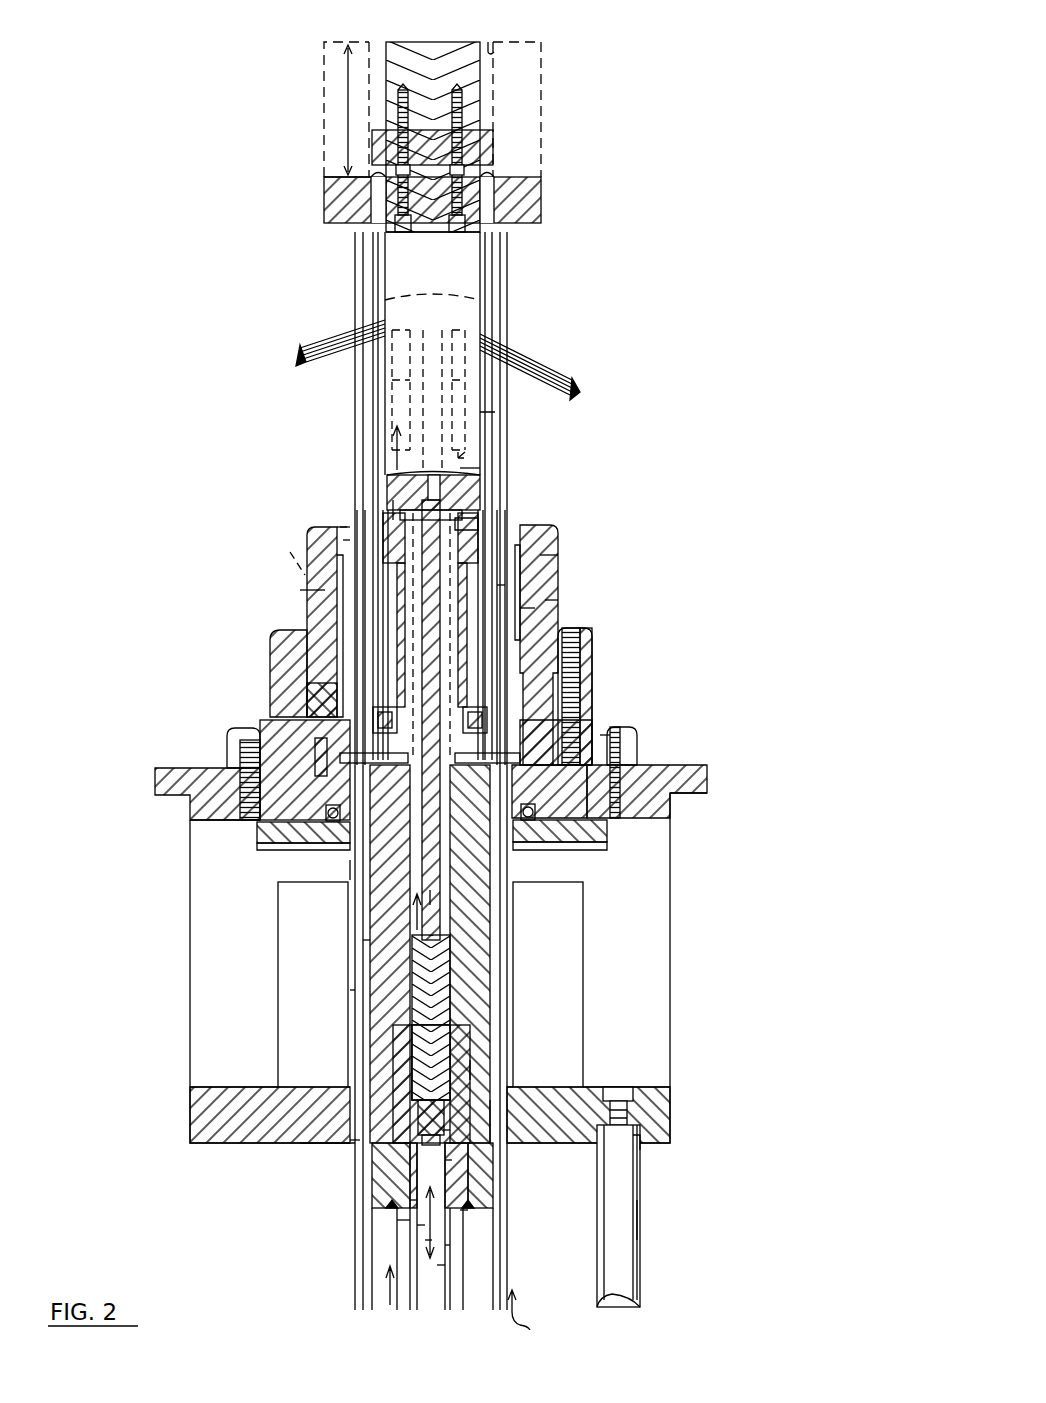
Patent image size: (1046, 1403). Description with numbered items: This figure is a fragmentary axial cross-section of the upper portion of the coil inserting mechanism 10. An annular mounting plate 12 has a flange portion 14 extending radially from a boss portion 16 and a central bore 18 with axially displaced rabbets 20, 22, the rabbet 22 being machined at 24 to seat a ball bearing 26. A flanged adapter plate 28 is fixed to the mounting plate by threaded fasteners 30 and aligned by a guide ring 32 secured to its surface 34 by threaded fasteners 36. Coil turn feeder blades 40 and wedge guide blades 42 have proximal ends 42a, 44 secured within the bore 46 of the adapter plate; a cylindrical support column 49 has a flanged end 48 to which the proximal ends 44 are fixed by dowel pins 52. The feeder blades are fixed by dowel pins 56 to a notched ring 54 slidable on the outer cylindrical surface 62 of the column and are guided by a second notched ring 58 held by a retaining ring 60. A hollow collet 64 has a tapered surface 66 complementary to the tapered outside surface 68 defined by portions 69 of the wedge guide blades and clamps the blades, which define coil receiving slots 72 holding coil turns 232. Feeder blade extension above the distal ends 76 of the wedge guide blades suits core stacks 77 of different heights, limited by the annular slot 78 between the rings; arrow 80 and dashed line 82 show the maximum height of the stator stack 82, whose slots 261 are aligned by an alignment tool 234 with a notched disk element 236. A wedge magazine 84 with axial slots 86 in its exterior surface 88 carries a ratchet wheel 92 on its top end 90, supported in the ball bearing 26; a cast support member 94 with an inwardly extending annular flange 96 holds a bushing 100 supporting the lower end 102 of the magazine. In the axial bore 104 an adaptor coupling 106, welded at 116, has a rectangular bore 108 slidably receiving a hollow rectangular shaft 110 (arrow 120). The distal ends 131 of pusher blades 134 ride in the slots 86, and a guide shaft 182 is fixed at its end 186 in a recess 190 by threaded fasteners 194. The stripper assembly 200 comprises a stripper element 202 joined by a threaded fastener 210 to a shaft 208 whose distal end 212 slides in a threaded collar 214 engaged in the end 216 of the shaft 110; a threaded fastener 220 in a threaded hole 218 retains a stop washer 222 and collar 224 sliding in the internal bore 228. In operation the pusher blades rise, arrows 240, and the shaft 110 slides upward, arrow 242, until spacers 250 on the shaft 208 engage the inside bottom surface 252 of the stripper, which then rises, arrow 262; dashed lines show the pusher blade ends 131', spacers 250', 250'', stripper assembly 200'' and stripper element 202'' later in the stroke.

The mechanism 10 is at (787, 1218).
The annular mounting plate 12 is at (620, 775).
The flange portion 14 is at (707, 790).
The boss portion 16 is at (660, 806).
The annular central bore 18 is at (630, 765).
The rabbet 20 is at (605, 740).
The rabbet 22 is at (525, 846).
The bearing seat 24 is at (607, 828).
The ball bearing 26 is at (670, 770).
The adapter plate 28 is at (280, 765).
The threaded fasteners 30 is at (246, 728).
The guide ring 32 is at (257, 822).
The surface 34 is at (230, 780).
The threaded fasteners 36 is at (262, 830).
The coil turn feeder blades 40 is at (541, 215).
The wedge guide blades 42 is at (507, 250).
The proximal ends 42a is at (592, 680).
The proximal ends of wedge guide blades 44 is at (545, 730).
The bore of hub 46 is at (558, 602).
The flanged end 48 is at (280, 640).
The support column 49 is at (558, 556).
The dowel pins 52 is at (315, 700).
The notched ring 54 is at (345, 555).
The dowel pins 56 is at (325, 615).
The notched ring 58 is at (395, 535).
The retaining ring 60 is at (478, 520).
The outer cylindrical surface 62 is at (580, 640).
The collet 64 is at (555, 528).
The tapered surface 66 is at (347, 527).
The tapered outside surface 68 is at (350, 528).
The portions of wedge guide blades 69 is at (350, 540).
The coil receiving slots 72 is at (492, 285).
The distal ends of wedge guide blades 76 is at (363, 251).
The core stack 77 is at (324, 178).
The annular slot 78 is at (500, 587).
The arrow 80 is at (348, 100).
The dashed line 82 is at (541, 48).
The wedge magazine 84 is at (383, 872).
The axially extending slots 86 is at (362, 945).
The exterior surface 88 is at (353, 995).
The top end of magazine 90 is at (352, 870).
The ratchet wheel 92 is at (282, 840).
The cast support member 94 is at (195, 985).
The annular flange 96 is at (293, 1097).
The cylindrical bushing 100 is at (493, 1133).
The lower end of magazine 102 is at (380, 1153).
The axial cylindrical bore 104 is at (462, 918).
The adaptor coupling 106 is at (462, 1040).
The rectangular bore 108 is at (424, 1226).
The hollow rectangular shaft 110 is at (449, 1247).
The weld 116 is at (430, 1240).
The double ended arrow 120 is at (407, 1222).
The distal ends of pusher blades 131 is at (626, 1086).
The distal ends of pusher blades (advanced position) 131' is at (276, 555).
The pusher blades 134 is at (494, 1202).
The guide shaft 182 is at (640, 1218).
The end of guide shaft 186 is at (640, 1150).
The complementary recess 190 is at (642, 1127).
The threaded fasteners 194 is at (620, 1088).
The stripper assembly 200 is at (544, 436).
The stripper assembly (later position) 200'' is at (432, 268).
The stripper element 202 is at (537, 455).
The stripper element (later position) 202'' is at (505, 378).
The elongated shaft 208 is at (480, 414).
The threaded fastener 210 is at (394, 505).
The distal end of shaft 212 is at (303, 1143).
The threaded collar 214 is at (353, 1142).
The end of rectangular shaft 216 is at (444, 1138).
The threaded hole 218 is at (478, 1072).
The threaded fastener 220 is at (415, 1205).
The stop washer 222 is at (465, 1213).
The collar 224 is at (448, 1163).
The internal bore 228 is at (438, 1268).
The coil turns 232 is at (305, 340).
The alignment tool 234 is at (493, 150).
The notched disk element 236 is at (493, 196).
The arrows 240 is at (382, 1280).
The arrow 242 is at (416, 917).
The spacers 250 is at (496, 800).
The spacers (later position) 250' is at (623, 599).
The spacers (later position) 250'' is at (542, 400).
The inside bottom surface 252 is at (505, 348).
The stator slots 261 is at (494, 45).
The arrow 262 is at (397, 460).